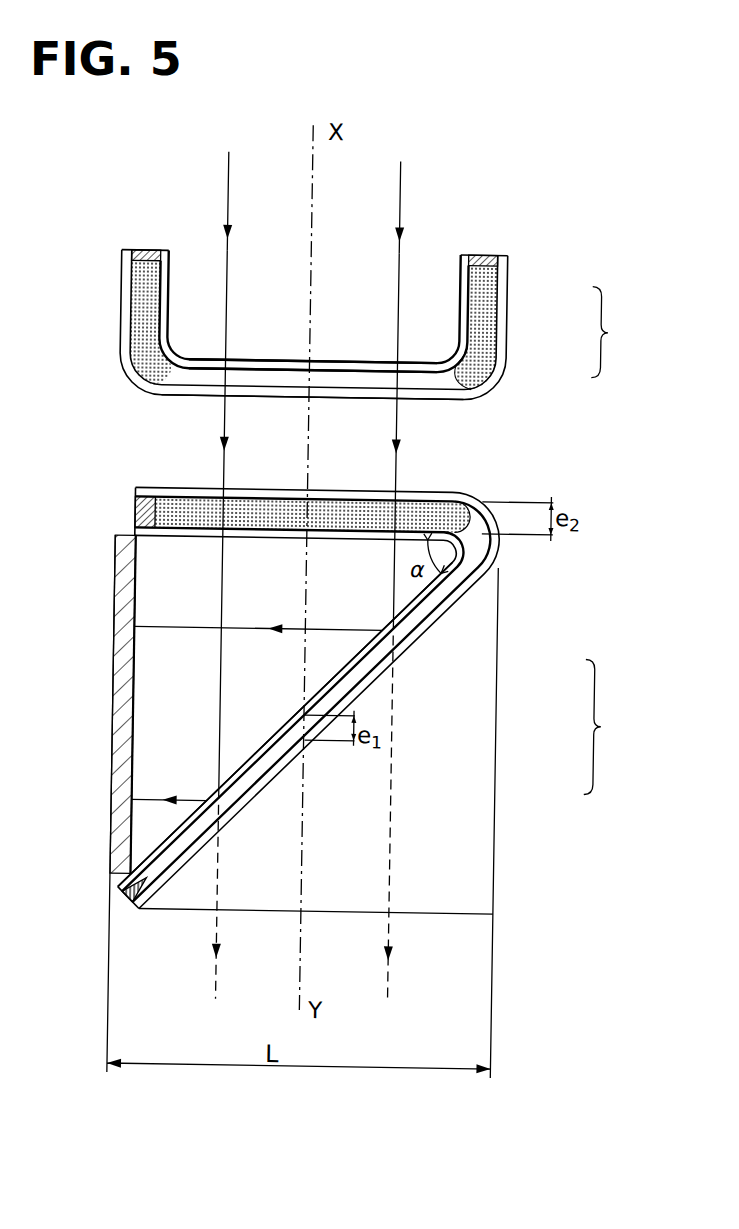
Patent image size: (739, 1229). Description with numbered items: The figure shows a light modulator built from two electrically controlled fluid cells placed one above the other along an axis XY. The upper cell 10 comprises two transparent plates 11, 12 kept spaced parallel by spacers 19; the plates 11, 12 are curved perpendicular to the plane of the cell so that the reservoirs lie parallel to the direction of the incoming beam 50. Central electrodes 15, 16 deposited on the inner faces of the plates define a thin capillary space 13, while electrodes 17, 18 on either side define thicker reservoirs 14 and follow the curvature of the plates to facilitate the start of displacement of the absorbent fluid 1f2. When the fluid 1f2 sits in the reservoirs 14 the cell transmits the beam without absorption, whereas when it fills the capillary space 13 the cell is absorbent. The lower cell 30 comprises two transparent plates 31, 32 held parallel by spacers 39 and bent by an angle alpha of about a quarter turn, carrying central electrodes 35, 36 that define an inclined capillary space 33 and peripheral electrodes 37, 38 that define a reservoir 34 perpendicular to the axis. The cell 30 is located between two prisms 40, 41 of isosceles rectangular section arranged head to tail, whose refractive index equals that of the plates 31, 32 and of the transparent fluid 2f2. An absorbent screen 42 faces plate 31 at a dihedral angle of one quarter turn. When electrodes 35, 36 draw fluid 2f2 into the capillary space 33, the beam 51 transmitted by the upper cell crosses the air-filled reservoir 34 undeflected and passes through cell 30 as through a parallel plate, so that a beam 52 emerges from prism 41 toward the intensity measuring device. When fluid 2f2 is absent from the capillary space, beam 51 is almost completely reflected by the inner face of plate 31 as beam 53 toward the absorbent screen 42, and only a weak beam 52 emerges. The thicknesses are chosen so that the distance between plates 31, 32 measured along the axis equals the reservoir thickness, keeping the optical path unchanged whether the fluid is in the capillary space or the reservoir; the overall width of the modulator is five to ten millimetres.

The cell 10 is at (613, 333).
The transparent plate 11 is at (460, 278).
The transparent plate 12 is at (501, 265).
The capillary space 13 is at (339, 374).
The reservoir 14 is at (135, 288).
The central electrode 15 is at (250, 373).
The central electrode 16 is at (294, 388).
The electrode 17 is at (130, 312).
The electrode 18 is at (158, 327).
The spacer 19 is at (479, 253).
The fluid 1f2 is at (486, 348).
The cell 30 is at (606, 727).
The transparent plate 31 is at (196, 536).
The transparent plate 32 is at (158, 492).
The capillary space 33 is at (169, 899).
The reservoir 34 is at (134, 516).
The central electrode 35 is at (268, 760).
The central electrode 36 is at (250, 797).
The peripheral electrode 37 is at (253, 506).
The peripheral electrode 38 is at (284, 526).
The spacer 39 is at (130, 903).
The prism 40 is at (144, 602).
The prism 41 is at (444, 912).
The absorbent screen 42 is at (124, 751).
The fluid 2f2 is at (443, 498).
The beam 50 is at (248, 178).
The beam 51 is at (234, 420).
The beam 52 is at (223, 981).
The beam 53 is at (149, 690).